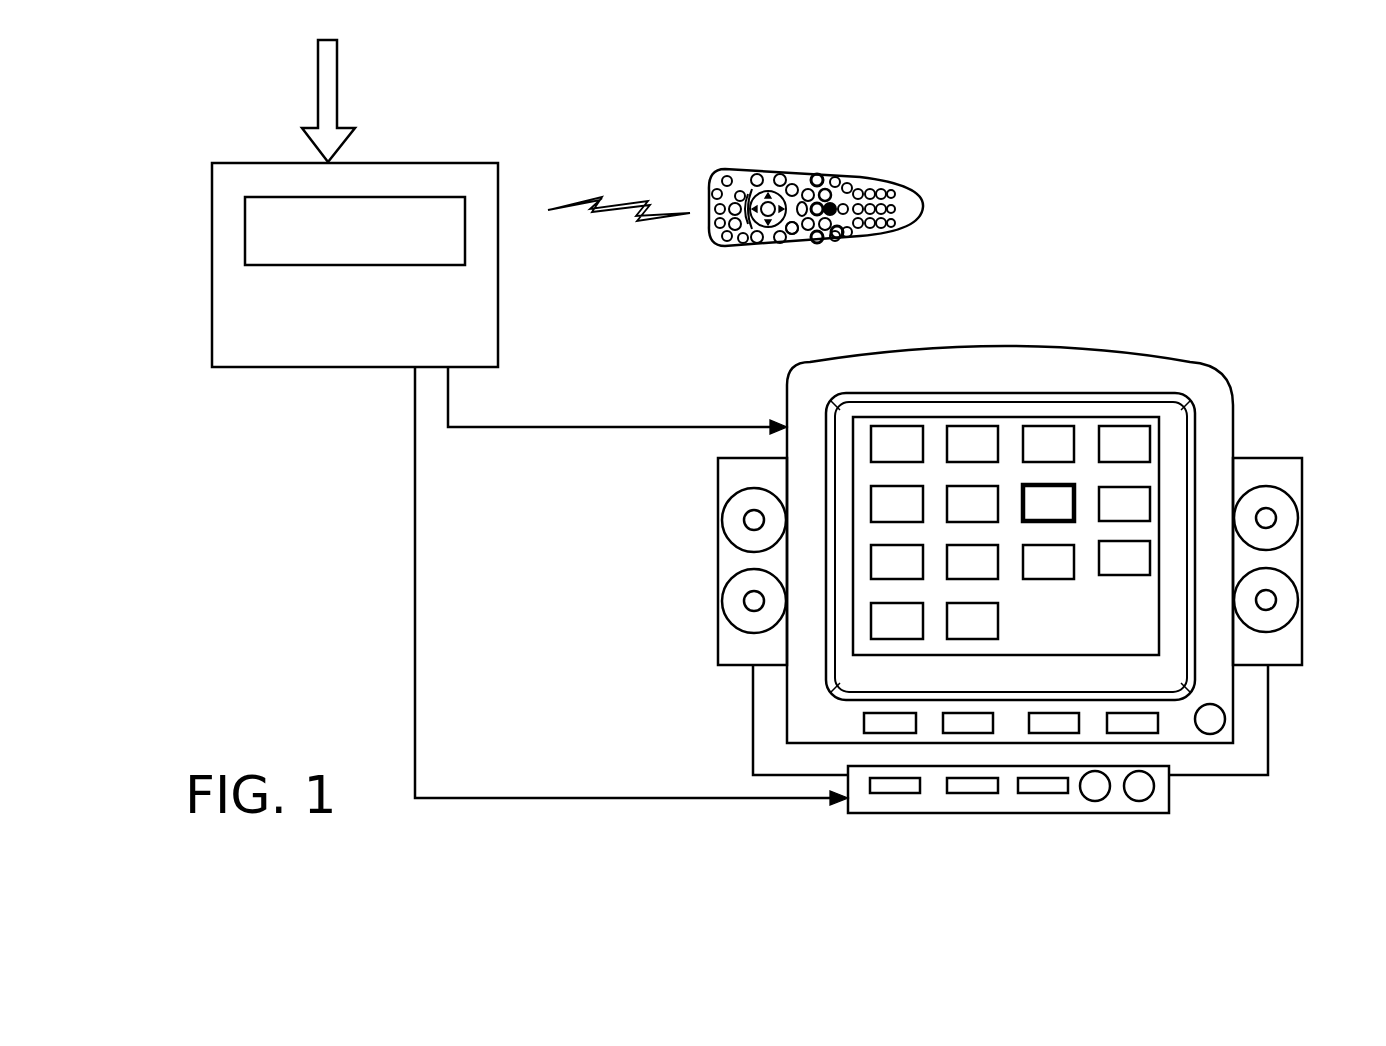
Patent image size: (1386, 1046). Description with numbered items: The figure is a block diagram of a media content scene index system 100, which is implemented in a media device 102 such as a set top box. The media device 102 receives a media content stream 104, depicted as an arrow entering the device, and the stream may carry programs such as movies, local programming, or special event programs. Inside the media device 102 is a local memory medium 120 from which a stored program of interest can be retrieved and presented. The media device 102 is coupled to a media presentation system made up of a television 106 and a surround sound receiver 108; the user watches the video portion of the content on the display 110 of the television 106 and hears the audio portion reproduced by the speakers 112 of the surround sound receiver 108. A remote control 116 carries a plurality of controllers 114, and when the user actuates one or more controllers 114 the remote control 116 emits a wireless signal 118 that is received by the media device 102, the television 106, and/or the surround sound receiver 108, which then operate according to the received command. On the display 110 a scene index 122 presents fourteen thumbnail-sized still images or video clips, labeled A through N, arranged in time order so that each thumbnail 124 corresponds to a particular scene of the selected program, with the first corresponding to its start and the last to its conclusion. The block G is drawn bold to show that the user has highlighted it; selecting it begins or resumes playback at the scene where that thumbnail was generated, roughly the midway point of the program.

The media content scene index system 100 is at (254, 452).
The media device 102 is at (355, 265).
The media content stream 104 is at (297, 99).
The television 106 is at (1160, 358).
The surround sound receiver 108 is at (988, 813).
The display 110 is at (1010, 546).
The speakers 112 is at (718, 568).
The controllers 114 is at (803, 242).
The remote control 116 is at (923, 207).
The wireless signal 118 is at (605, 247).
The local memory medium 120 is at (355, 231).
The scene index 122 is at (1040, 655).
The thumbnail 124 is at (1052, 605).